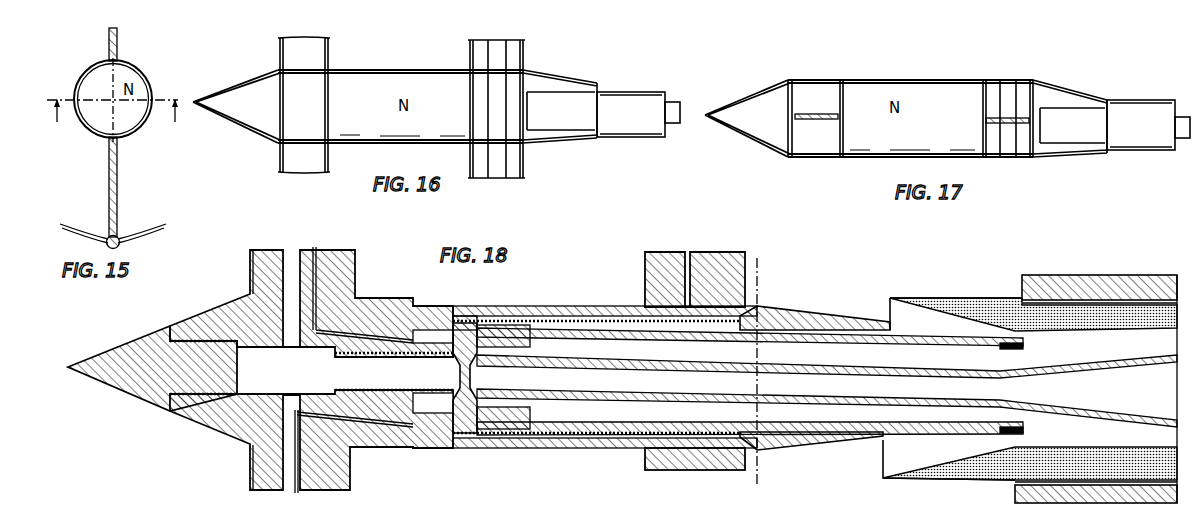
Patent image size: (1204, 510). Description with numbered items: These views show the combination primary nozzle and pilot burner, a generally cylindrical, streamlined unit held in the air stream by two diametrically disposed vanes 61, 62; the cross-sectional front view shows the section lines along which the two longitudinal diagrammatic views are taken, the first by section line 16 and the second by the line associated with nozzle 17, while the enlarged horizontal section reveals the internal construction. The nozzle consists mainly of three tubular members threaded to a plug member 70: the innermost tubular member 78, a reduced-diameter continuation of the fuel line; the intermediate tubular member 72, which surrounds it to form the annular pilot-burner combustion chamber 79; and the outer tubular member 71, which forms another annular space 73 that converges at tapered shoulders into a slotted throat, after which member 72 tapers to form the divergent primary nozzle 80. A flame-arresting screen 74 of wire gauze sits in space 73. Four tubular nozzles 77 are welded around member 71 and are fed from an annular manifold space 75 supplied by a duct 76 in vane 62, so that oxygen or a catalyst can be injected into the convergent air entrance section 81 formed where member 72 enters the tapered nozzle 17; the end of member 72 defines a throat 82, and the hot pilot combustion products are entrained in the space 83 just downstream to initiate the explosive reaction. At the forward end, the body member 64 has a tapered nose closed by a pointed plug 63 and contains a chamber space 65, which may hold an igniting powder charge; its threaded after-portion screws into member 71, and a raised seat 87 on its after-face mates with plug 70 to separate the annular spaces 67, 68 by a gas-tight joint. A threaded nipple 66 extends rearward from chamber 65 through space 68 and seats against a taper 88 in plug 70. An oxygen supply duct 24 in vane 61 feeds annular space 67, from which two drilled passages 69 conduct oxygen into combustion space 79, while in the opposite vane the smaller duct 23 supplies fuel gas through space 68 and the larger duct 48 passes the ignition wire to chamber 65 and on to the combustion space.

In FIG. 15, the section line 16— 16 is at (118, 31).
In FIG. 15, the nozzle 17 is at (111, 124).
In FIG. 18, the nozzle 17 is at (1040, 300).
In FIG. 18, the smaller duct 23 is at (370, 277).
In FIG. 18, the oxygen supply duct 24 is at (250, 462).
In FIG. 18, the larger duct 48 is at (250, 278).
In FIG. 15, the vane 61 is at (108, 191).
In FIG. 16, the vane 61 is at (280, 165).
In FIG. 17, the vane 61 is at (800, 116).
In FIG. 18, the vane 61 is at (250, 258).
In FIG. 16, the vane 62 is at (524, 162).
In FIG. 17, the vane 62 is at (992, 119).
In FIG. 18, the vane 62 is at (647, 470).
In FIG. 18, the pointed plug 63 is at (128, 393).
In FIG. 18, the body member 64 is at (200, 422).
In FIG. 18, the chamber space 65 is at (256, 357).
In FIG. 18, the threaded nipple 66 is at (373, 395).
In FIG. 18, the annular space 67 is at (408, 420).
In FIG. 18, the annular space 68 is at (432, 412).
In FIG. 18, the drilled passages 69 is at (460, 432).
In FIG. 18, the plug member 70 is at (479, 422).
In FIG. 18, the outer tubular member 71 is at (433, 306).
In FIG. 16, the intermediate tubular member 72 is at (630, 92).
In FIG. 18, the intermediate tubular member 72 is at (515, 325).
In FIG. 18, the annular space 73 is at (541, 328).
In FIG. 18, the flame-arresting screen 74 is at (577, 357).
In FIG. 18, the annular manifold space 75 is at (665, 302).
In FIG. 18, the duct 76 is at (687, 266).
In FIG. 16, the tubular nozzles 77 is at (554, 88).
In FIG. 18, the tubular nozzles 77 is at (820, 315).
In FIG. 16, the innermost tubular member 78 is at (672, 103).
In FIG. 18, the innermost tubular member 78 is at (603, 400).
In FIG. 18, the pilot-burner combustion chamber 79 is at (572, 410).
In FIG. 16, the divergent primary nozzle 80 is at (598, 84).
In FIG. 18, the divergent primary nozzle 80 is at (862, 322).
In FIG. 18, the convergent air entrance section 81 is at (920, 316).
In FIG. 18, the throat 82 is at (1075, 345).
In FIG. 18, the space 83 is at (1017, 337).
In FIG. 18, the raised seat 87 is at (413, 325).
In FIG. 18, the taper 88 is at (463, 320).